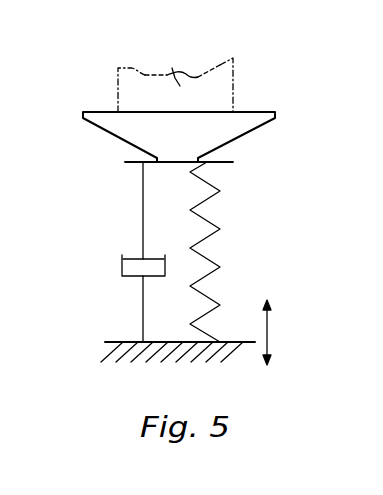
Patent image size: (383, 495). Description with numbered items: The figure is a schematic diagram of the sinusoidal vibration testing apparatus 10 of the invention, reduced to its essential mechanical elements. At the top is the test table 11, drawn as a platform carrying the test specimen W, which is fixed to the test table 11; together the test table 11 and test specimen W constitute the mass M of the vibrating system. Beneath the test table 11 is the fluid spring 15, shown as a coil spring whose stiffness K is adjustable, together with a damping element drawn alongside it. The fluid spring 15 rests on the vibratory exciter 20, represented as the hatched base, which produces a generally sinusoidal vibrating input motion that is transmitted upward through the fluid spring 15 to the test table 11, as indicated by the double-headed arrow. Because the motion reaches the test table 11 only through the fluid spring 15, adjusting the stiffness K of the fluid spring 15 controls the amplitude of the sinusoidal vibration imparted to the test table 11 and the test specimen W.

The sinusoidal vibration testing apparatus 10 is at (95, 153).
The test table 11 is at (242, 120).
The fluid spring 15 is at (232, 200).
The vibratory exciter 20 is at (178, 358).
The test specimen W is at (177, 83).
The mass M is at (179, 137).
The stiffness K is at (220, 268).